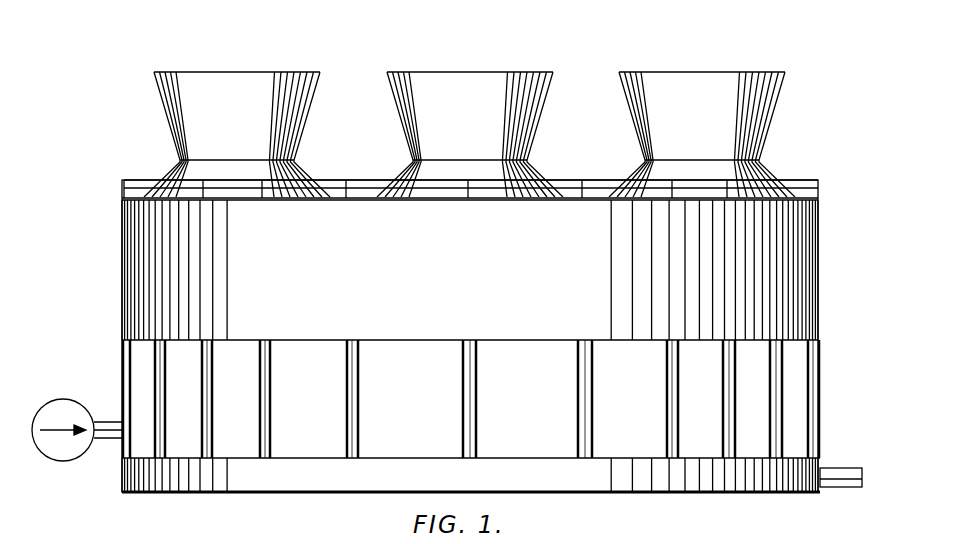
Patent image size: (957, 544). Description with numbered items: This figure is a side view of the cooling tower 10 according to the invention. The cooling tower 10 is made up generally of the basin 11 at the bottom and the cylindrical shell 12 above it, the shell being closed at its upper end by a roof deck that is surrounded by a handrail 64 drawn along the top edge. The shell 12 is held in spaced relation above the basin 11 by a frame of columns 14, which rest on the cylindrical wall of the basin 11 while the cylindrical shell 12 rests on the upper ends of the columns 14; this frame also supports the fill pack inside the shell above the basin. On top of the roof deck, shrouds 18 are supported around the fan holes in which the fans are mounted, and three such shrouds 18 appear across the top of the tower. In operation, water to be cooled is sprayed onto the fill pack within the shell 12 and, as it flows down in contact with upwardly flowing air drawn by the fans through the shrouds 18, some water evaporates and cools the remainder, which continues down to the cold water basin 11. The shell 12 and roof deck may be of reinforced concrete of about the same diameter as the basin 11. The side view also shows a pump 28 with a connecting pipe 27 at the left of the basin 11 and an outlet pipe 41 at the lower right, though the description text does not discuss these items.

The cooling tower 10 is at (820, 290).
The basin 11 is at (320, 482).
The cylindrical shell 12 is at (421, 267).
The frame columns 14 is at (666, 400).
The shrouds 18 is at (288, 72).
The pump discharge pipe 27 is at (108, 422).
The pump 28 is at (56, 462).
The outlet pipe 41 is at (842, 488).
The handrail 64 is at (805, 180).